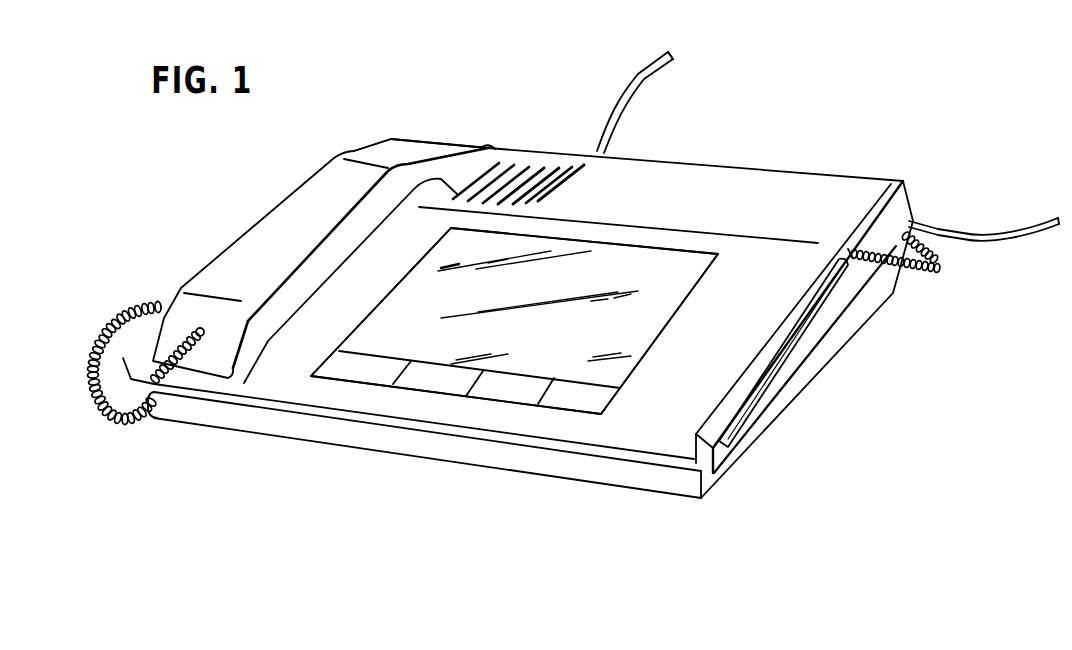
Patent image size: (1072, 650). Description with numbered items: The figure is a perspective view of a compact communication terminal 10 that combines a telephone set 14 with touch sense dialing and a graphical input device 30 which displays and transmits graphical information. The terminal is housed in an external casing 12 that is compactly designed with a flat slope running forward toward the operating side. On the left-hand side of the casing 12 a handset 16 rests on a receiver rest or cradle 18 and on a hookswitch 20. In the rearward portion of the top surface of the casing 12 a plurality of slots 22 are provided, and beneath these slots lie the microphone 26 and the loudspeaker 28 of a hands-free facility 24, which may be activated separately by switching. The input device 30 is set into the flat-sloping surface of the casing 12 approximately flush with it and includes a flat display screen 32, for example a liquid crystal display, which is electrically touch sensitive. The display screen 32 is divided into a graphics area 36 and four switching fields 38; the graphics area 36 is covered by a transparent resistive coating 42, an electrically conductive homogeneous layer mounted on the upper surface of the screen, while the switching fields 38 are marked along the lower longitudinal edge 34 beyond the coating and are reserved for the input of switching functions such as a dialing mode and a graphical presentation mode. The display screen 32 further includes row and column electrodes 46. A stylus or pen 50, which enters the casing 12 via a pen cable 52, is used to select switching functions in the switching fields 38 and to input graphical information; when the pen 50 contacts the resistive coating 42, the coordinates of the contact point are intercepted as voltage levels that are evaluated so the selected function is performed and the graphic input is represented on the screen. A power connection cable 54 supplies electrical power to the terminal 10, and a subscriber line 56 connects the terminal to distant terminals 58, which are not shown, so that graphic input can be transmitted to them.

The communication terminal 10 is at (783, 89).
The casing 12 is at (518, 318).
The telephone set 14 is at (496, 125).
The handset 16 is at (320, 261).
The cradle 18 is at (144, 357).
The hookswitch 20 is at (421, 123).
The slots 22 is at (529, 184).
The hands-free facility 24 is at (533, 156).
The microphone 26 is at (544, 194).
The loudspeaker 28 is at (588, 179).
The input device 30 is at (514, 321).
The flat display screen 32 is at (662, 334).
The lower longitudinal edge 34 is at (456, 395).
The graphics area 36 is at (381, 302).
The switching fields 38 is at (479, 366).
The transparent resistive coating 42 is at (549, 245).
The row and column electrodes 46 is at (591, 307).
The stylus or pen 50 is at (783, 353).
The pen cable 52 is at (916, 261).
The power connection cable 54 is at (984, 214).
The subscriber line 56 is at (635, 102).
The distant terminals 58 is at (695, 37).